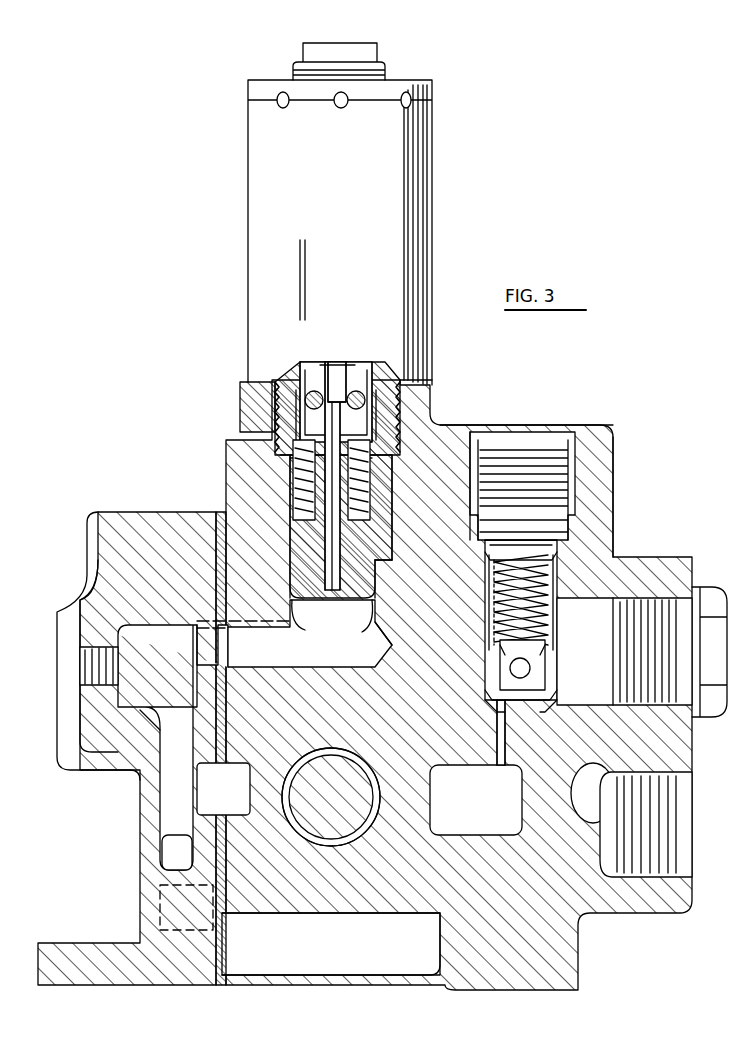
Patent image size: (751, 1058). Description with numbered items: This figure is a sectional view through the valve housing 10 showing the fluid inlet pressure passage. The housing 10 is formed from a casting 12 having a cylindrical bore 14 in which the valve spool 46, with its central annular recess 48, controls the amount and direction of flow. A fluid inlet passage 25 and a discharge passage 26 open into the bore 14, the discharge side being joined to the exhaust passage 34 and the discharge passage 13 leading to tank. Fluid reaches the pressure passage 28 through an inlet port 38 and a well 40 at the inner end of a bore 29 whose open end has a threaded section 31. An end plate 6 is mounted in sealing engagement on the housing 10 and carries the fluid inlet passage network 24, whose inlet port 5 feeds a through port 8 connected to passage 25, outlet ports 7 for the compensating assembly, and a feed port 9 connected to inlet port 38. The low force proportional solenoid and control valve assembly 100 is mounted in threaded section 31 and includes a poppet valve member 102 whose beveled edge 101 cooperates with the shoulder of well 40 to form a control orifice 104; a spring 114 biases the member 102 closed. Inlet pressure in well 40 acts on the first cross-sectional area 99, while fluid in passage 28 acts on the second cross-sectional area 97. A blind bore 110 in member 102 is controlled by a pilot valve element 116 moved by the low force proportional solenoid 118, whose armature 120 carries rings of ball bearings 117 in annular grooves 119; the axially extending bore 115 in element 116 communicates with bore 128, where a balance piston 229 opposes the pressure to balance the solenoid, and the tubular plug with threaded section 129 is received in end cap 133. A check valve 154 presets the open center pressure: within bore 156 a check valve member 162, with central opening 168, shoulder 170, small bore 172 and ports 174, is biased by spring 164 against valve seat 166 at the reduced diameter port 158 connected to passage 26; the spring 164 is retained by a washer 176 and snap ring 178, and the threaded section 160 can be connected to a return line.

The inlet port 5 is at (86, 652).
The end plate 6 is at (170, 510).
The outlet port 7 is at (196, 935).
The through port 8 is at (190, 770).
The feed port 9 is at (203, 630).
The valve housing 10 is at (620, 480).
The casting 12 is at (636, 913).
The discharge passage 13 is at (668, 806).
The cylindrical bore 14 is at (350, 748).
The fluid inlet passage network 24 is at (156, 722).
The fluid inlet passage 25 is at (234, 808).
The discharge passage 26 is at (500, 808).
The pressure passage 28 is at (386, 583).
The bore 29 is at (393, 488).
The threaded section 31 is at (402, 412).
The exhaust passage 34 is at (598, 768).
The inlet port 38 is at (256, 670).
The well 40 is at (292, 607).
The valve spool 46 is at (352, 778).
The central annular recess 48 is at (373, 797).
The second cross-sectional area 97 is at (384, 560).
The first cross-sectional area 99 is at (309, 618).
The low force proportional solenoid and control valve assembly 100 is at (436, 190).
The beveled edge 101 is at (354, 622).
The poppet valve member 102 is at (386, 522).
The control orifice 104 is at (400, 623).
The blind bore 110 is at (341, 542).
The spring 114 is at (296, 464).
The axially extending bore 115 is at (316, 508).
The pilot valve element 116 is at (300, 435).
The rings of ball bearings 117 is at (312, 406).
The low force proportional solenoid 118 is at (433, 140).
The annular grooves 119 is at (290, 388).
The armature 120 is at (406, 372).
The bore 128 is at (336, 370).
The threaded section 129 is at (386, 75).
The end cap 133 is at (418, 100).
The check valve 154 is at (560, 600).
The bore 156 is at (486, 568).
The reduced diameter port 158 is at (497, 740).
The threaded section 160 is at (570, 478).
The check valve member 162 is at (488, 620).
The spring 164 is at (560, 593).
The valve seat 166 is at (545, 700).
The central opening 168 is at (488, 600).
The shoulder 170 is at (500, 648).
The small bore 172 is at (546, 652).
The ports 174 is at (510, 668).
The washer 176 is at (562, 572).
The snap ring 178 is at (560, 552).
The balance piston 229 is at (328, 372).